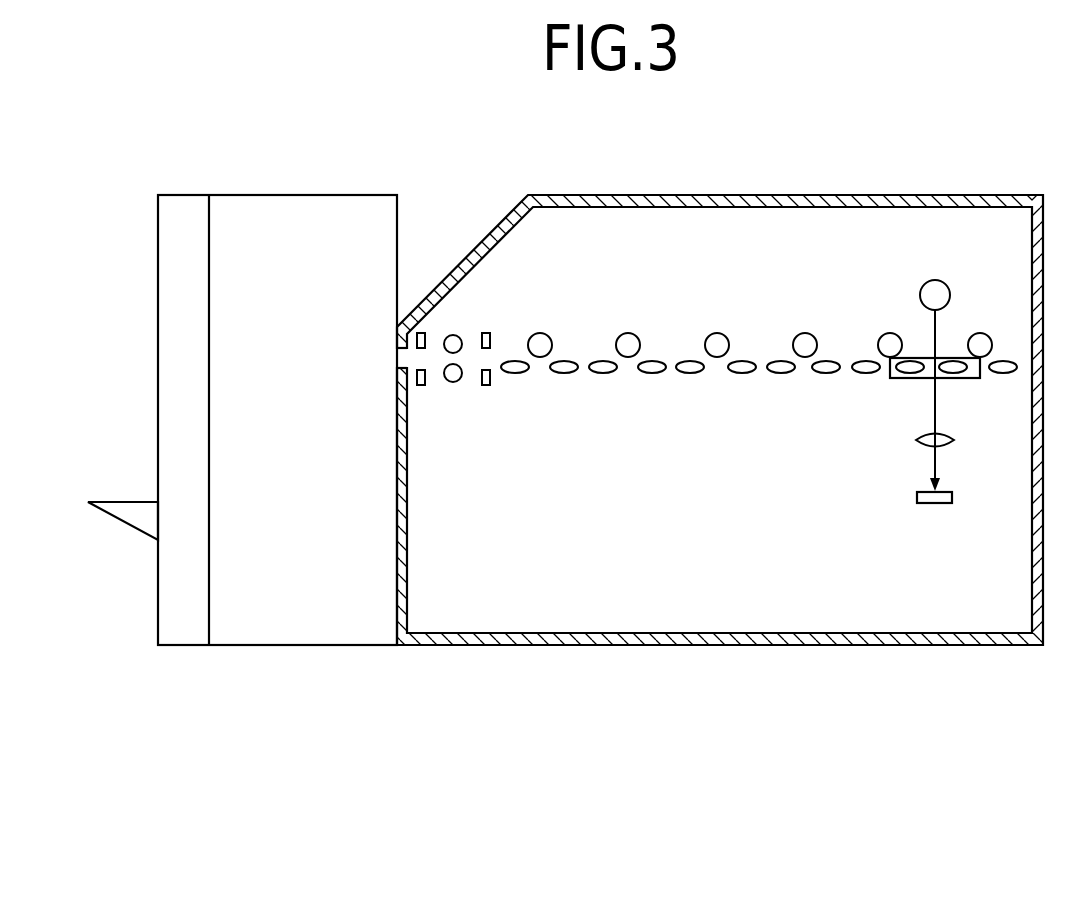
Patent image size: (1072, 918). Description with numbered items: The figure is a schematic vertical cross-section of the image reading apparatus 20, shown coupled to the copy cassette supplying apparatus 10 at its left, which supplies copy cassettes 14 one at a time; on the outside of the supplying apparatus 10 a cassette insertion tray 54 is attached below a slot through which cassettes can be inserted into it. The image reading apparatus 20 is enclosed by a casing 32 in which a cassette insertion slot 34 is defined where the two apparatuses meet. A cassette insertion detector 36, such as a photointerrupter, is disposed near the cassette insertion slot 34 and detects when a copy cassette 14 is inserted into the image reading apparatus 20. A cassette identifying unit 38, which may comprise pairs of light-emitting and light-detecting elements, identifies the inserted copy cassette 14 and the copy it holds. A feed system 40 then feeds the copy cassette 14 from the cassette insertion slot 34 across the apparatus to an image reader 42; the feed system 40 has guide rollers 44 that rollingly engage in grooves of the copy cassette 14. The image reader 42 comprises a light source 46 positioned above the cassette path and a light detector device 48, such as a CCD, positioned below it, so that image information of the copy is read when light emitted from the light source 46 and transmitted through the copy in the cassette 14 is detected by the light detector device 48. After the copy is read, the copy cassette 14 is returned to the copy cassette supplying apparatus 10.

The copy cassette supplying apparatus 10 is at (306, 190).
The copy cassette 14 is at (892, 380).
The image reading apparatus 20 is at (734, 192).
The casing 32 is at (573, 637).
The cassette insertion slot 34 is at (398, 359).
The cassette insertion detector 36 is at (424, 386).
The cassette identifying unit 38 is at (489, 386).
The feed system 40 is at (672, 330).
The image reader 42 is at (900, 463).
The guide rollers 44 is at (603, 368).
The light source 46 is at (924, 290).
The light detector device 48 is at (933, 505).
The cassette insertion tray 54 is at (97, 514).